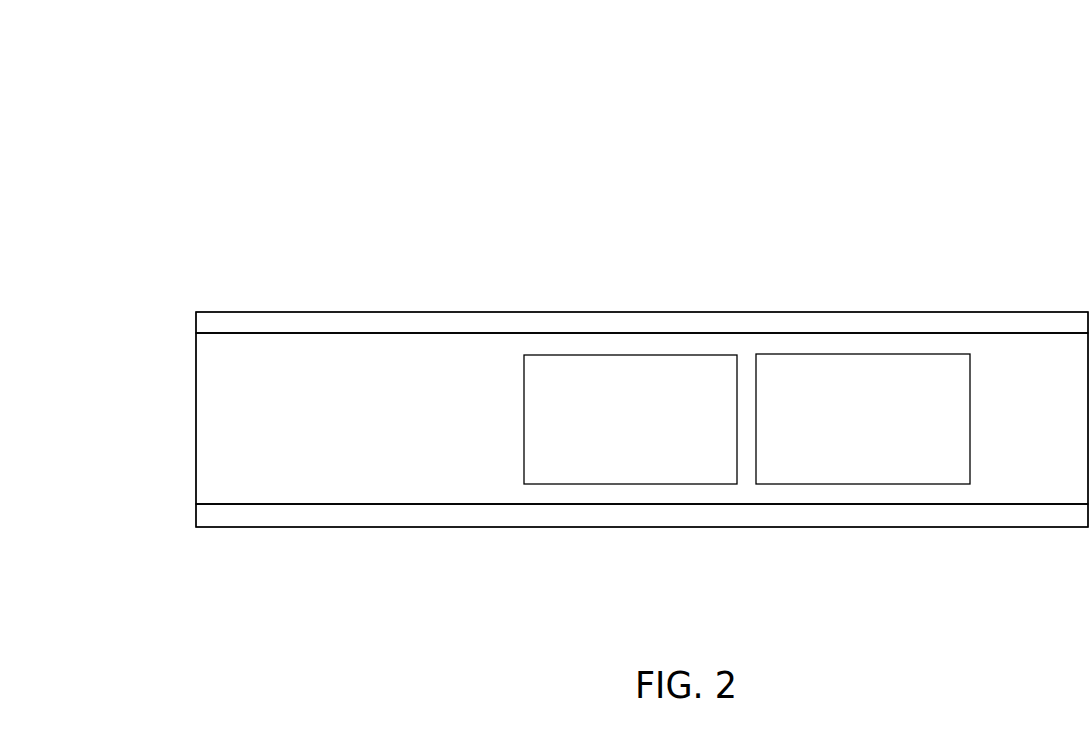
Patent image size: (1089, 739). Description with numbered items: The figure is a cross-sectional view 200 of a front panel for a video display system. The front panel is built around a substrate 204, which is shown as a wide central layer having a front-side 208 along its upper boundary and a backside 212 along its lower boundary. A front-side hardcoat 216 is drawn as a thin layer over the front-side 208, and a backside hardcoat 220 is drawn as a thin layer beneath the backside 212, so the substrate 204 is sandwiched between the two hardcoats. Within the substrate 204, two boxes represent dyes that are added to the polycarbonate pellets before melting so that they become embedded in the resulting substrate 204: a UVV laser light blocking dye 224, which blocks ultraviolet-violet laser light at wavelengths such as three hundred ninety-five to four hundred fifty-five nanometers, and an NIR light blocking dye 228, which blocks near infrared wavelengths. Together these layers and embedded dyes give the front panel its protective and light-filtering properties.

The cross-sectional view 200 is at (160, 76).
The substrate 204 is at (421, 373).
The front-side 208 is at (827, 320).
The backside 212 is at (851, 518).
The front-side hardcoat 216 is at (472, 302).
The backside hardcoat 220 is at (484, 542).
The UVV laser light blocking dye 224 is at (612, 478).
The NIR light blocking dye 228 is at (888, 465).